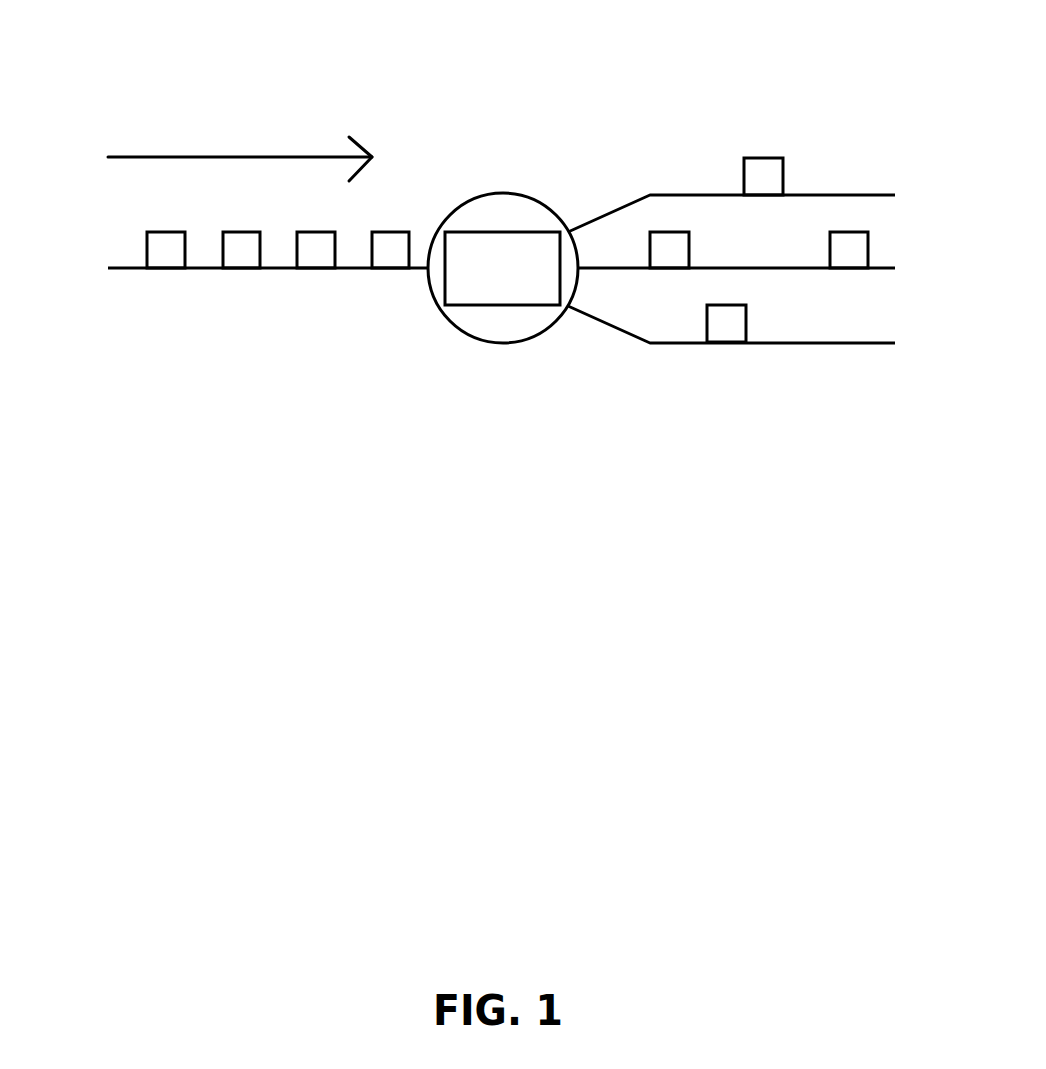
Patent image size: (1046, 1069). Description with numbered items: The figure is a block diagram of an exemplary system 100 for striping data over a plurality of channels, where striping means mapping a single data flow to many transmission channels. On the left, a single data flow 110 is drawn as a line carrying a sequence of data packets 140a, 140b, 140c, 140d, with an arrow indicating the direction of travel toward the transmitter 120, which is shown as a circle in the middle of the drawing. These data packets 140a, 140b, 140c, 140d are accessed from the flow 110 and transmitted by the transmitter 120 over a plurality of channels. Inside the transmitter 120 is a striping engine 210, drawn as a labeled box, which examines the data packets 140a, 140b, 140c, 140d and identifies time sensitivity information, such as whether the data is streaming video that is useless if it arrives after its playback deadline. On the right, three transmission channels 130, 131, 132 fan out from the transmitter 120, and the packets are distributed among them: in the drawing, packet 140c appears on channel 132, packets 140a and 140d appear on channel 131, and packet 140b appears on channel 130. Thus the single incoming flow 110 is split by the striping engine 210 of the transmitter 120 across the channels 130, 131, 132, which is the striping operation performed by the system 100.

The system 100 is at (528, 34).
The data flow 110 is at (123, 268).
The transmitter 120 is at (535, 203).
The striping engine 210 is at (487, 298).
The channel 130 is at (893, 344).
The channel 131 is at (893, 269).
The channel 132 is at (893, 196).
The data packet 140a is at (167, 232).
The data packet 140b is at (245, 232).
The data packet 140c is at (297, 257).
The data packet 140d is at (395, 232).